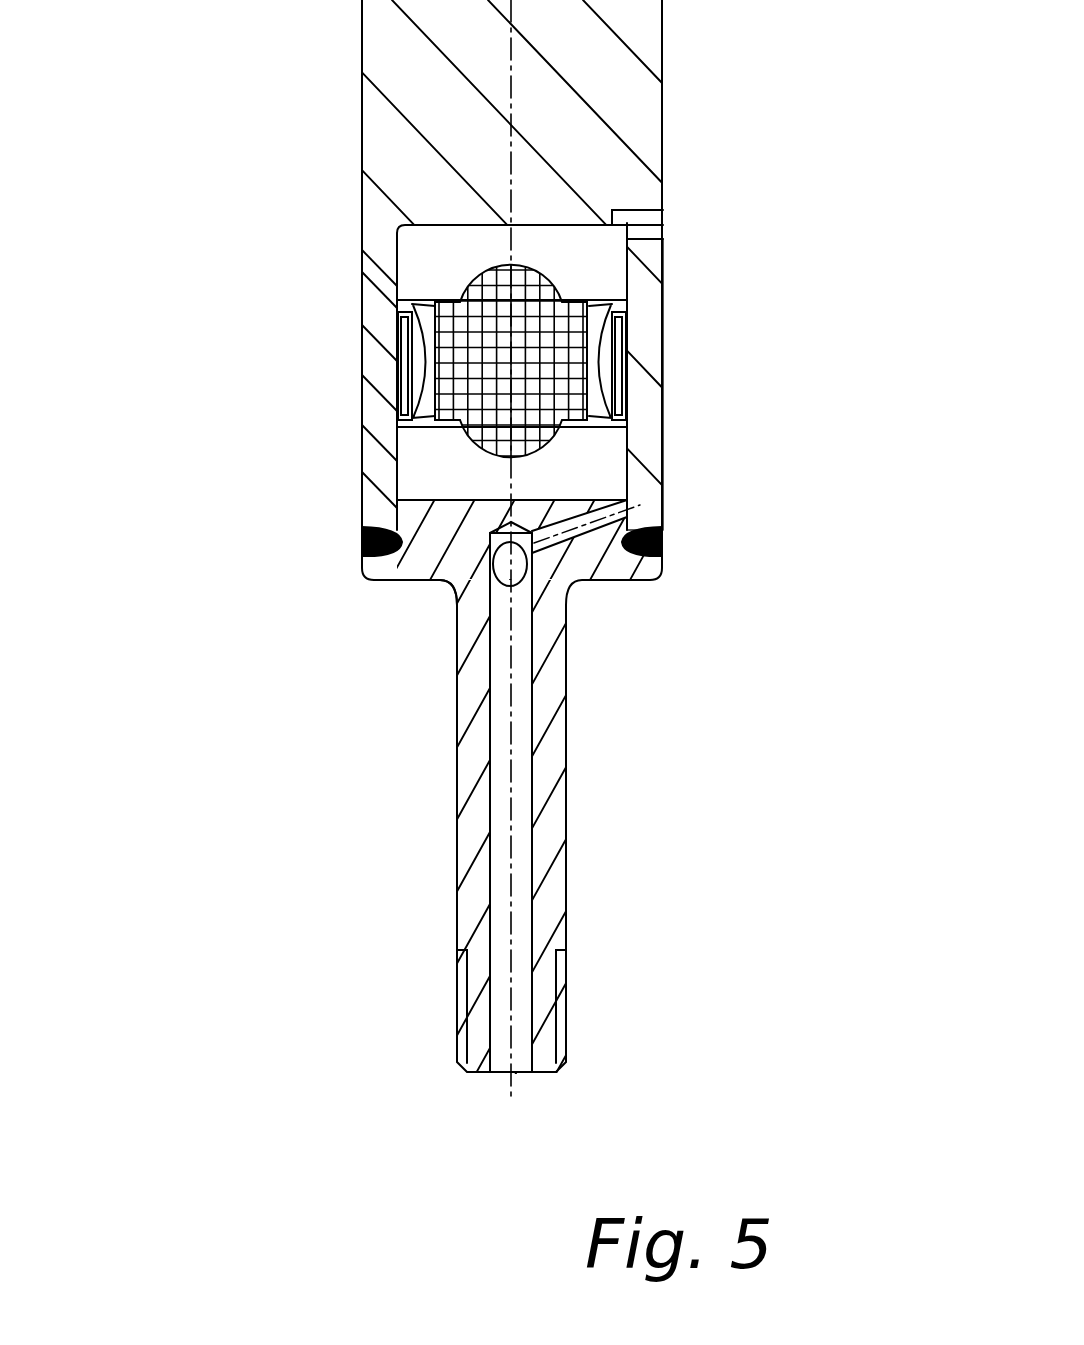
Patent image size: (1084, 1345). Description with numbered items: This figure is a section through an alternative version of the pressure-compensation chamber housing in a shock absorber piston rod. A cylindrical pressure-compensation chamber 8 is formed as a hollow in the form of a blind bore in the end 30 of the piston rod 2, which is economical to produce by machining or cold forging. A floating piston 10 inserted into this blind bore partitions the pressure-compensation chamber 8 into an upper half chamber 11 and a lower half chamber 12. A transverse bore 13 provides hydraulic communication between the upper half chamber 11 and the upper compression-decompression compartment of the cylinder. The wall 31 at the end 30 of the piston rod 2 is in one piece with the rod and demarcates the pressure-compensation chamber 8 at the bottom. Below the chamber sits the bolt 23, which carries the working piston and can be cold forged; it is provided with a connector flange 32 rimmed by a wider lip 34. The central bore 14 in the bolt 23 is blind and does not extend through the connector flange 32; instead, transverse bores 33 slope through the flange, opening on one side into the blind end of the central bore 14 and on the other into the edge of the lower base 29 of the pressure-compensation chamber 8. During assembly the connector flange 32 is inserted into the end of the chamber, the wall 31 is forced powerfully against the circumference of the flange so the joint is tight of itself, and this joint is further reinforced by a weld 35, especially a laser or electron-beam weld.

The piston rod 2 is at (625, 102).
The pressure-compensation chamber 8 is at (466, 272).
The floating piston 10 is at (394, 355).
The upper half chamber 11 is at (597, 268).
The lower half chamber 12 is at (430, 444).
The transverse bore 13 is at (648, 220).
The central bore 14 is at (522, 797).
The bolt 23 is at (548, 827).
The lower base 29 is at (468, 490).
The end 30 is at (352, 150).
The wall 31 is at (647, 425).
The connector flange 32 is at (432, 555).
The transverse bores 33 is at (577, 537).
The lip 34 is at (383, 558).
The weld 35 is at (665, 533).